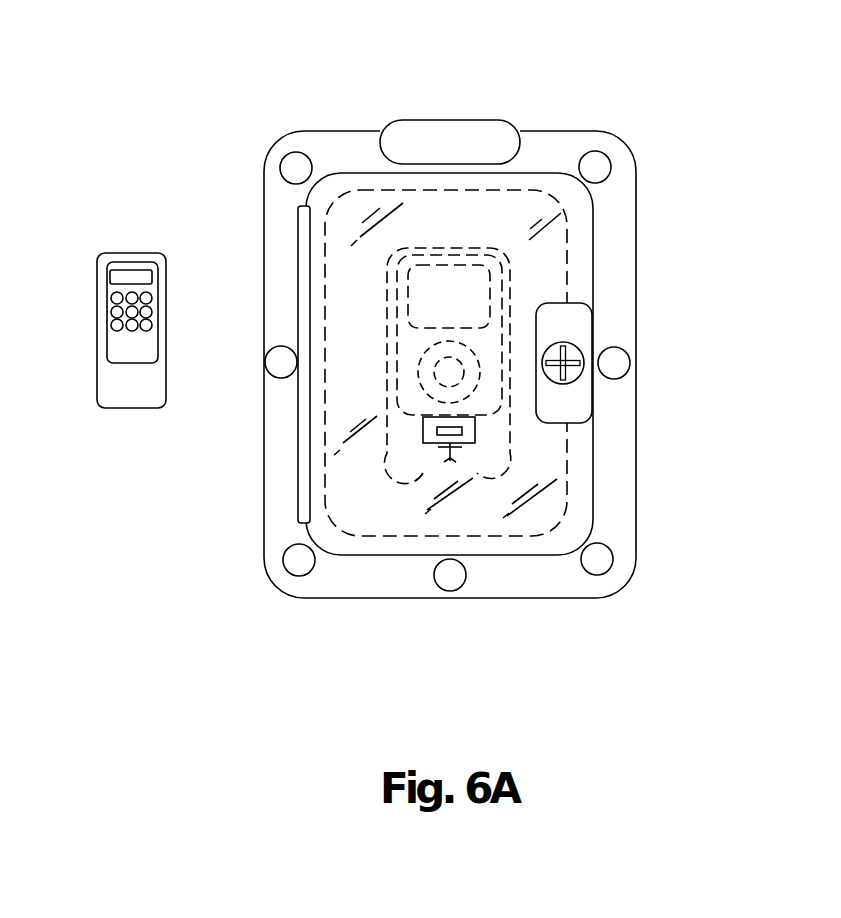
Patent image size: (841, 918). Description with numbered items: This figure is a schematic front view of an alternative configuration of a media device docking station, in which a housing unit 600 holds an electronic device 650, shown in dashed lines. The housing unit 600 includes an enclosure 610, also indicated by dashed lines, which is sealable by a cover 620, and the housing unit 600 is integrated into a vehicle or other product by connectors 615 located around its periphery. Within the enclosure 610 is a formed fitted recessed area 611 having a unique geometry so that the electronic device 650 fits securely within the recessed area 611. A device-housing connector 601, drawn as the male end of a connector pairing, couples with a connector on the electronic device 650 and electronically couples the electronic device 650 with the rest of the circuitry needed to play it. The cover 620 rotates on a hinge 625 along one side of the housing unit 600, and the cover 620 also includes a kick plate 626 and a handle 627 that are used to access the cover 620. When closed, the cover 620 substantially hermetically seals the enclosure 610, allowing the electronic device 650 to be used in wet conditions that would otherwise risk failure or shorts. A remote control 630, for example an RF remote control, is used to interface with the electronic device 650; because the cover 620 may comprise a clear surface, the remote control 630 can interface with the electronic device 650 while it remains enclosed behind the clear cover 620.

The housing unit 600 is at (738, 120).
The device-housing connector 601 is at (475, 438).
The enclosure 610 is at (324, 420).
The recessed area 611 is at (403, 483).
The connectors 615 is at (295, 154).
The cover 620 is at (340, 175).
The hinge 625 is at (298, 255).
The kick plate 626 is at (575, 303).
The handle 627 is at (580, 352).
The remote control 630 is at (128, 253).
The electronic device 650 is at (503, 253).